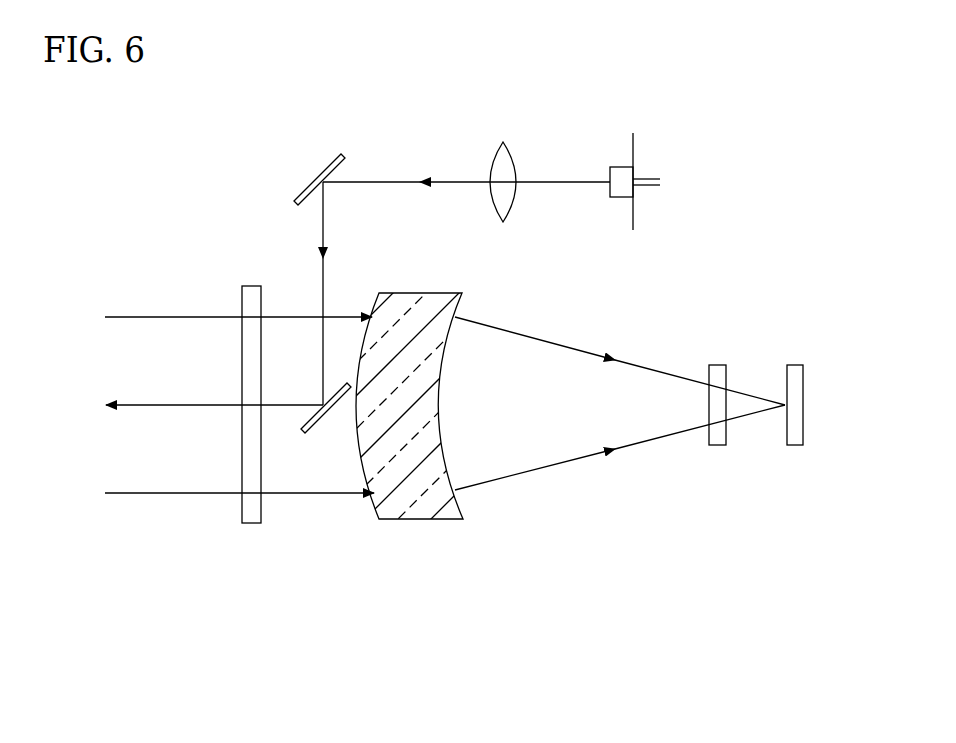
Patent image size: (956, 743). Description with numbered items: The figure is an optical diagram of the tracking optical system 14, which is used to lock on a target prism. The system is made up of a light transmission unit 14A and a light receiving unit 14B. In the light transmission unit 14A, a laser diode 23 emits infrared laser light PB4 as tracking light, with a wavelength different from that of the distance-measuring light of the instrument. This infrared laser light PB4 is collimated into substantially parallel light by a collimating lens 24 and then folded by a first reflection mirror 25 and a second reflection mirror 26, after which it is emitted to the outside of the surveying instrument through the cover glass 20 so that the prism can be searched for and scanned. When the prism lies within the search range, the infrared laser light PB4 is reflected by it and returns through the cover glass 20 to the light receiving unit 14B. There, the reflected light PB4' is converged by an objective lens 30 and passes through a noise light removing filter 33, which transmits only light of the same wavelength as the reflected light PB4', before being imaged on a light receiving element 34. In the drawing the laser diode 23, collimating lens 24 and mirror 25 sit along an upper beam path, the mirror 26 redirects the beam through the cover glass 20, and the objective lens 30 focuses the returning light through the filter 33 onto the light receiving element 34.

The tracking optical system 14 is at (583, 108).
The light transmission unit 14A is at (550, 224).
The light receiving unit 14B is at (556, 597).
The cover glass 20 is at (252, 534).
The laser diode 23 is at (645, 147).
The collimating lens 24 is at (513, 144).
The reflection mirror 25 is at (300, 181).
The reflection mirror 26 is at (319, 421).
The objective lens 30 is at (416, 536).
The noise light removing filter 33 is at (719, 452).
The light receiving element 34 is at (800, 452).
The infrared laser light PB4 is at (239, 405).
The reflected light PB4' is at (620, 437).